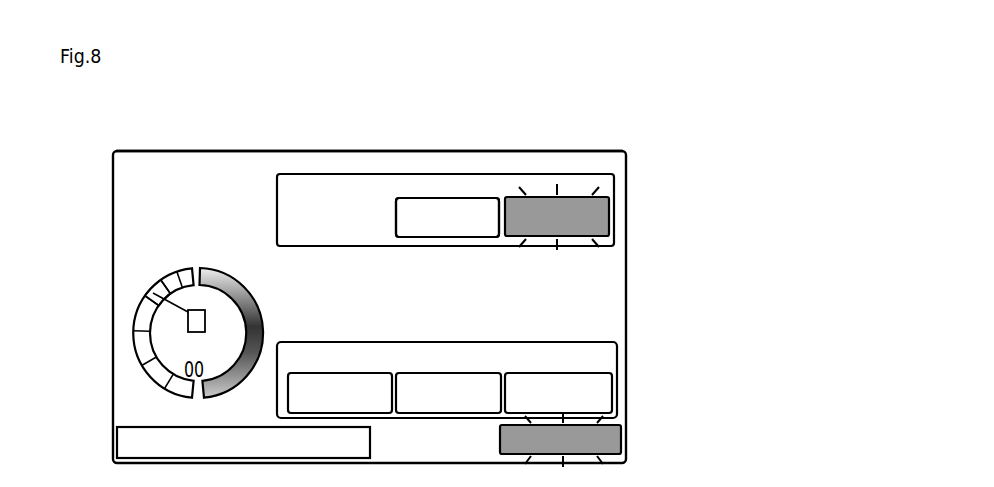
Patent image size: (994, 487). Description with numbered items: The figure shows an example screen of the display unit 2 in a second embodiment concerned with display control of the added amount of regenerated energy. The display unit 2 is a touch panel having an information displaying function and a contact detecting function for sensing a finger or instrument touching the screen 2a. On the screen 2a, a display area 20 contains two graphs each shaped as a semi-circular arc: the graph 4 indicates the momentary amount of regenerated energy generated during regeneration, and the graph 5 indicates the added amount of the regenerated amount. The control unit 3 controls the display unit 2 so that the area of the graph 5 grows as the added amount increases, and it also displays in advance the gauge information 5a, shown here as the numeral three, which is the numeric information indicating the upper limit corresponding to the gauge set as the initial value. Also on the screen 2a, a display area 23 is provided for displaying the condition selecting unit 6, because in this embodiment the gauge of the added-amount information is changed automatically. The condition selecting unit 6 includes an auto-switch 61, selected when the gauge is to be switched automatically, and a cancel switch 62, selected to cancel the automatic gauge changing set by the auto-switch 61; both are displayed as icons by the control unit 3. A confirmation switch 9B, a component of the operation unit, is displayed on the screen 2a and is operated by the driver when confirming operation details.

The display unit 2 is at (551, 143).
The screen 2a is at (393, 152).
The display area 23 is at (463, 173).
The condition selecting unit 6 is at (375, 223).
The auto-switch 61 is at (458, 231).
The cancel switch 62 is at (610, 218).
The confirmation switch 9B is at (622, 438).
The graph 4 is at (152, 378).
The graph 5 is at (242, 381).
The gauge information 5a is at (160, 288).
The control unit 3 is at (179, 314).
The display area 20 is at (200, 238).